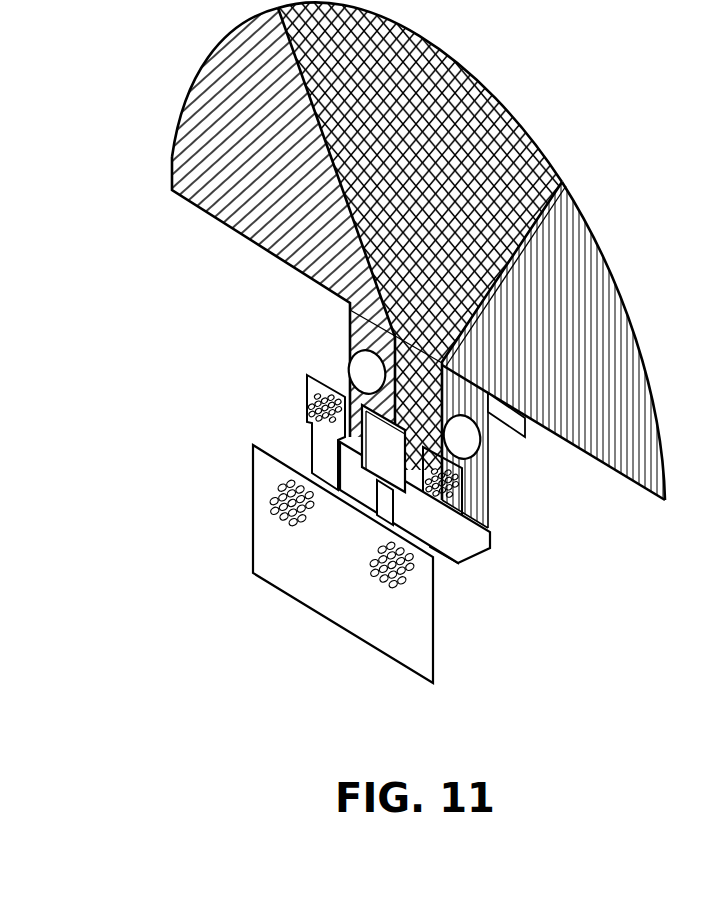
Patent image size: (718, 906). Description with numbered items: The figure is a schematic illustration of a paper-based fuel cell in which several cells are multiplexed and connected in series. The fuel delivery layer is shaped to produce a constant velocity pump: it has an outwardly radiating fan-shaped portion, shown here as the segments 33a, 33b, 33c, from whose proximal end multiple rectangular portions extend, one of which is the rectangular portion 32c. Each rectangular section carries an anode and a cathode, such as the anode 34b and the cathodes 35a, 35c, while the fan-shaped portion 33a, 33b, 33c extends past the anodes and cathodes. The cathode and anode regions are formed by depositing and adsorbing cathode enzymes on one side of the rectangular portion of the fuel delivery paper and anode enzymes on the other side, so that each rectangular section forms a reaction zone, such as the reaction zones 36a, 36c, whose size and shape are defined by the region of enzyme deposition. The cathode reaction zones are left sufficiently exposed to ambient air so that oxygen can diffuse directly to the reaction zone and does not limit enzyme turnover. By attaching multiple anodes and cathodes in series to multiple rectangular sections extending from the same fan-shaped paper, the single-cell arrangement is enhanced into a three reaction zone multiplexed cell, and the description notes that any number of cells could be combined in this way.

The rectangular portion 32c is at (482, 482).
The fan-shaped portion 33a is at (247, 172).
The fan-shaped portion 33b is at (467, 103).
The fan-shaped portion 33c is at (578, 265).
The anode 34b is at (420, 375).
The cathode 35a is at (320, 410).
The cathode 35c is at (447, 540).
The reaction zone 36a is at (362, 369).
The reaction zone 36c is at (467, 428).